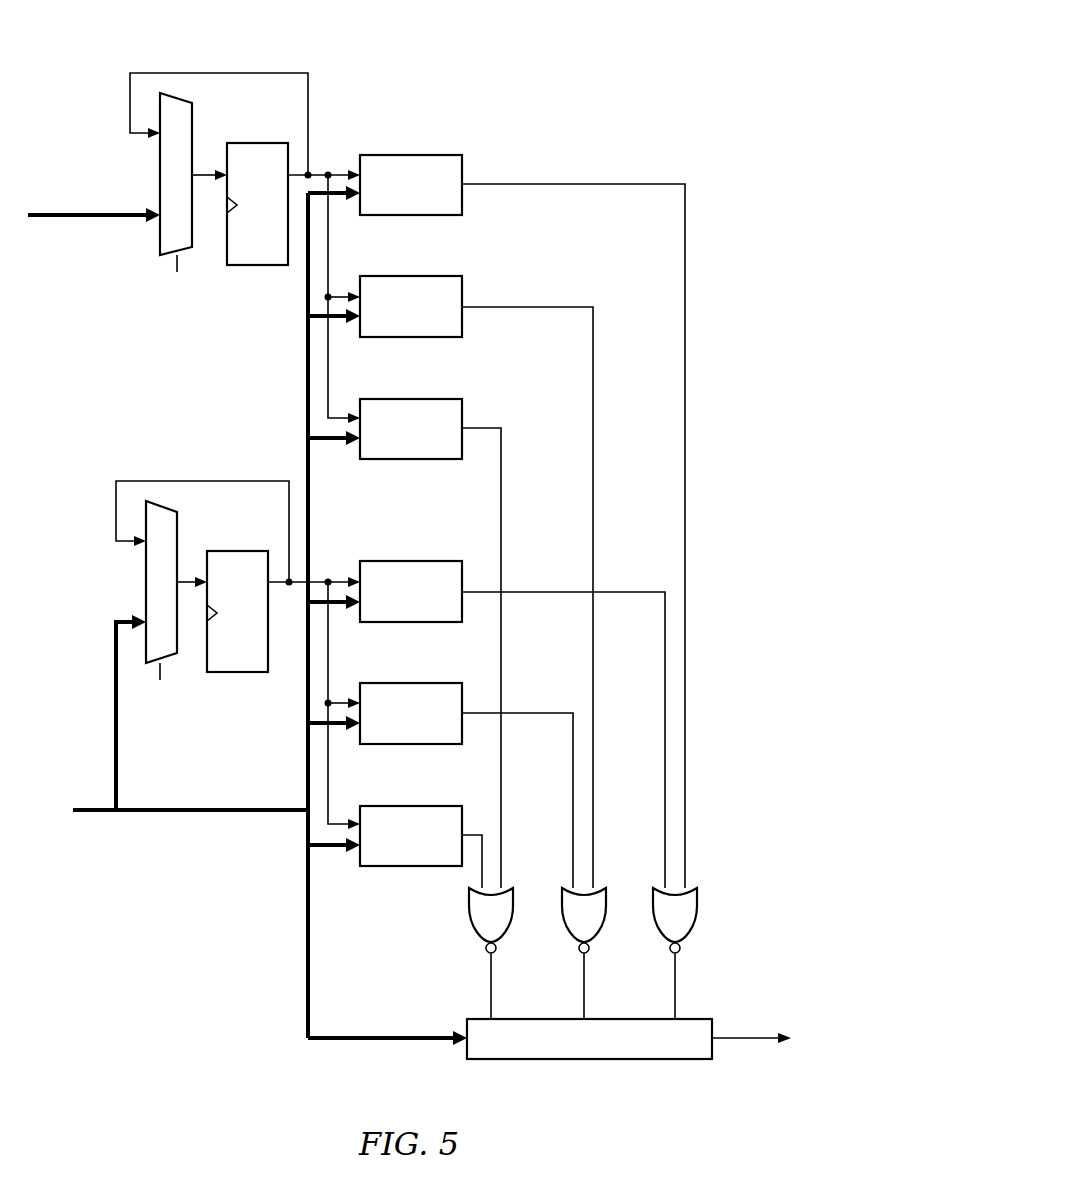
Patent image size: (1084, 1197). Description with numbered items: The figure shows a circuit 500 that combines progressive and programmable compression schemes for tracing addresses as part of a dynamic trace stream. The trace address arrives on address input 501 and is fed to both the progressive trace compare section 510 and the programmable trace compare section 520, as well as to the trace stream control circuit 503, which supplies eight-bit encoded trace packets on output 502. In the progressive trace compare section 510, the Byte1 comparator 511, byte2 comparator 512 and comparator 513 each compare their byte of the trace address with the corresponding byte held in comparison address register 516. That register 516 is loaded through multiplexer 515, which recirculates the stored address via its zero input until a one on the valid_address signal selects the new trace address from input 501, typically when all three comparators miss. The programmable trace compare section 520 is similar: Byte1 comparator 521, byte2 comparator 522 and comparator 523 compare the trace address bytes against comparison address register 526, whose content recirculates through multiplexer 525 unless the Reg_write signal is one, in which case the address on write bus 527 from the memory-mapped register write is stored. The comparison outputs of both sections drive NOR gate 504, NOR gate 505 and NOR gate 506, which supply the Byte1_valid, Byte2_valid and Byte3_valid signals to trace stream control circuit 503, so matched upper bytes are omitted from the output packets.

The trace compression circuit 500 is at (609, 66).
The address input 501 is at (202, 808).
The output 502 is at (752, 1035).
The trace stream control circuit 503 is at (600, 1061).
The NOR gate 504 is at (469, 910).
The NOR gate 505 is at (606, 906).
The NOR gate 506 is at (698, 907).
The progressive trace compare section 510 is at (721, 785).
The Byte1 comparator 511 is at (420, 804).
The byte2 comparator 512 is at (430, 681).
The comparator 513 is at (390, 623).
The multiplexer 515 is at (178, 533).
The comparison address register 516 is at (244, 673).
The programmable trace compare section 520 is at (719, 220).
The Byte1 comparator 521 is at (420, 397).
The byte2 comparator 522 is at (430, 274).
The comparator 523 is at (390, 217).
The multiplexer 525 is at (194, 126).
The comparison address register 526 is at (264, 266).
The write bus 527 is at (90, 217).